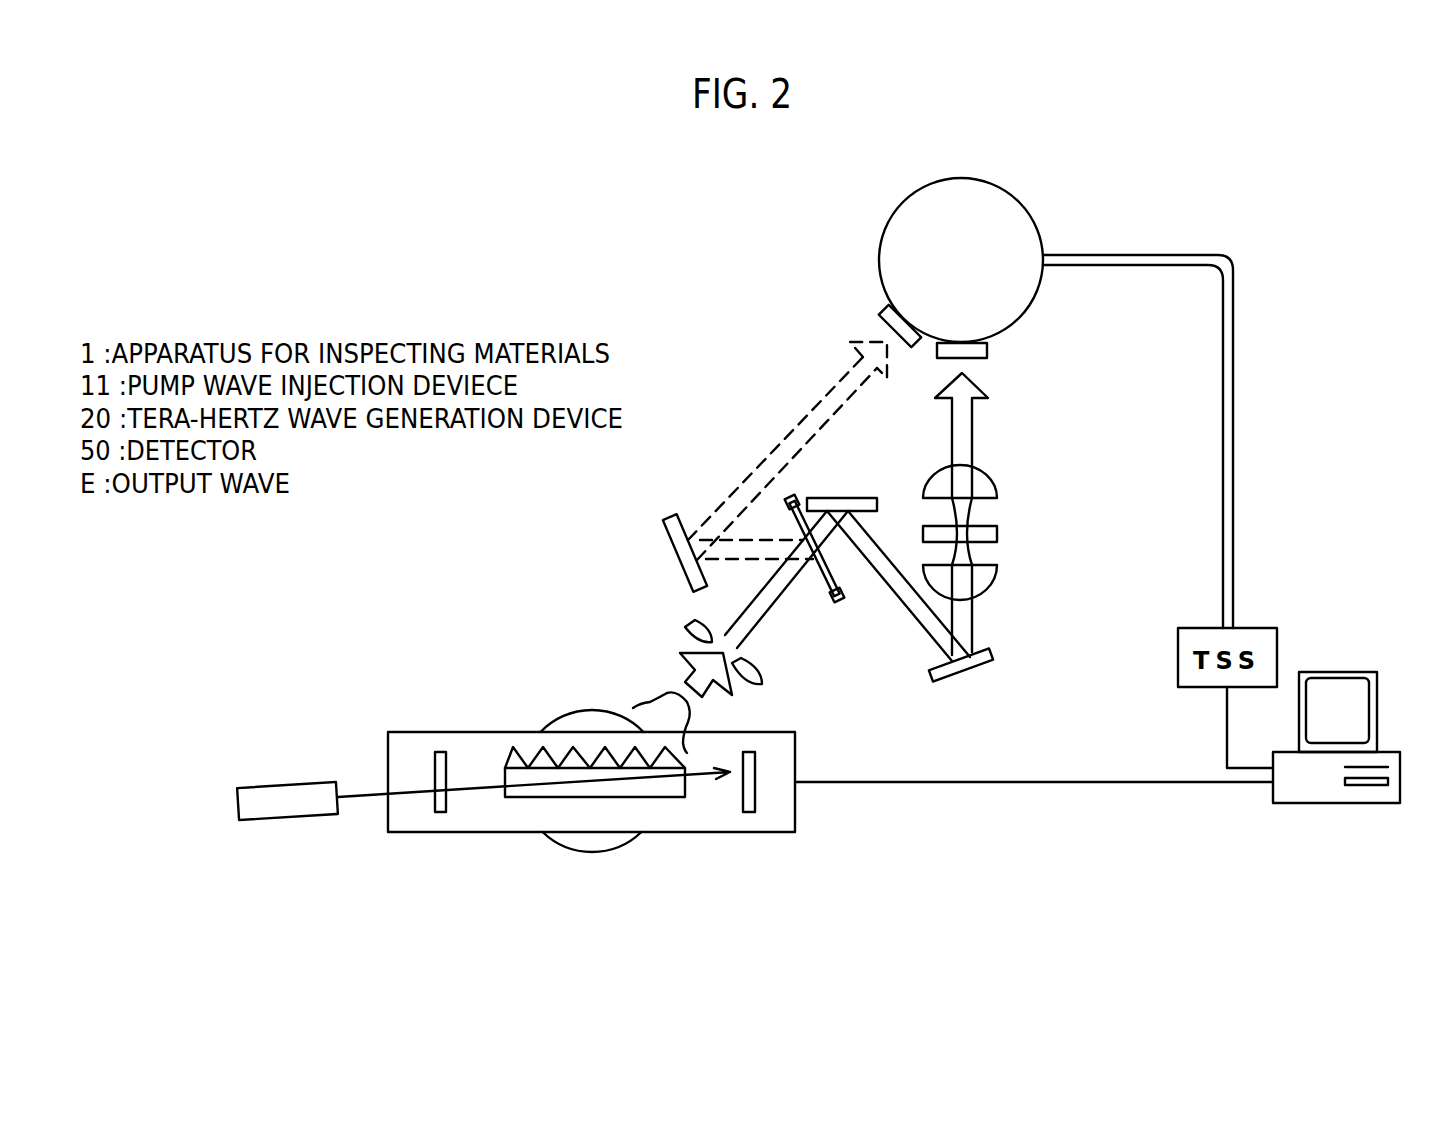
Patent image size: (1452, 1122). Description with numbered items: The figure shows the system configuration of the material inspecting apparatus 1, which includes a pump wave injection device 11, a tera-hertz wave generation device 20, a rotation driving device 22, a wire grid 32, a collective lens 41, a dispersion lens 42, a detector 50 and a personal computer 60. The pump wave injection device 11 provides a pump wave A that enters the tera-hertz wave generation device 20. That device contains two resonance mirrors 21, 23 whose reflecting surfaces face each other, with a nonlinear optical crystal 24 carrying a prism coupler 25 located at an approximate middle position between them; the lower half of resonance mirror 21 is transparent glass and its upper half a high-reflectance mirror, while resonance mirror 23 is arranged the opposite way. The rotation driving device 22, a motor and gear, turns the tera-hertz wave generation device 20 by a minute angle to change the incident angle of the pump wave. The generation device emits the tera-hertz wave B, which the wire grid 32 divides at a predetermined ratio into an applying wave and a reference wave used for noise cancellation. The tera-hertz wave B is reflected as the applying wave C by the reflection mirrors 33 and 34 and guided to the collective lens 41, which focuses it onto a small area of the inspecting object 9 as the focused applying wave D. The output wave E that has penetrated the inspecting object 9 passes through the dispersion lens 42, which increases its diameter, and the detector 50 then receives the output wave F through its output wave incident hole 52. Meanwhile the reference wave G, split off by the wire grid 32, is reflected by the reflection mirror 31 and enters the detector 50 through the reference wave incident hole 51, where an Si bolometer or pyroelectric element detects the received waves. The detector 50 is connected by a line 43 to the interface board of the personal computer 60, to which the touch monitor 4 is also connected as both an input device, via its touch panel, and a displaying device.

The material inspecting apparatus 1 is at (670, 234).
The pump wave injection device 11 is at (255, 812).
The tera-hertz wave generation device 20 is at (589, 783).
The resonance mirror 21 is at (440, 812).
The rotation driving device 22 is at (609, 849).
The resonance mirror 23 is at (750, 812).
The nonlinear optical crystal 24 is at (563, 734).
The prism coupler 25 is at (521, 765).
The reflection mirror 31 is at (678, 548).
The wire grid 32 is at (825, 583).
The reflection mirror 33 is at (862, 498).
The reflection mirror 34 is at (940, 672).
The collective lens 41 is at (980, 578).
The dispersion lens 42 is at (980, 485).
The cable 43 is at (1226, 385).
The touch monitor 4 is at (1347, 708).
The inspecting object 9 is at (985, 532).
The detector 50 is at (1001, 170).
The reference wave incident hole 51 is at (887, 310).
The output wave incident hole 52 is at (990, 350).
The personal computer 60 is at (1350, 773).
The pump wave A is at (365, 792).
The tera-hertz wave B is at (690, 722).
The applying wave C is at (922, 618).
The focused applying wave D is at (960, 553).
The output wave E is at (960, 513).
The output wave F is at (963, 432).
The reference wave G is at (800, 400).